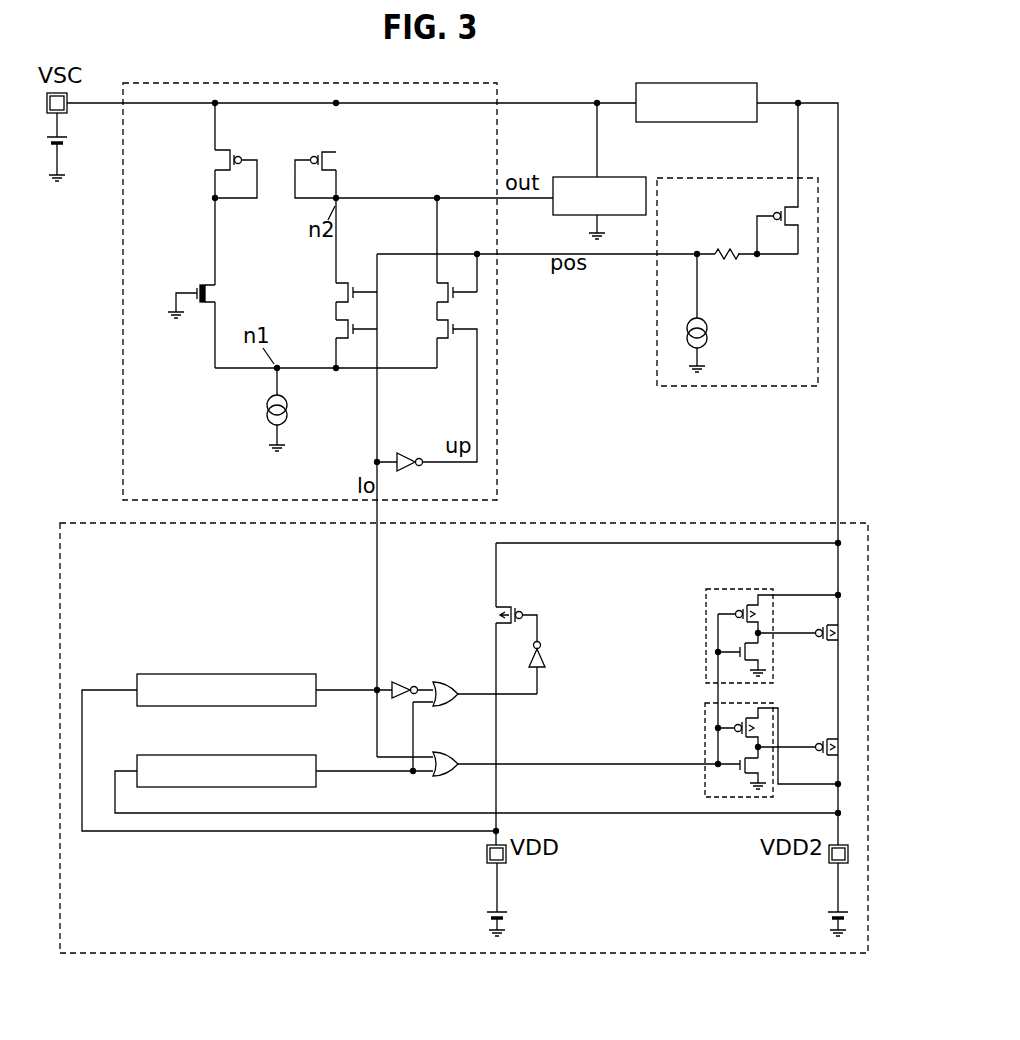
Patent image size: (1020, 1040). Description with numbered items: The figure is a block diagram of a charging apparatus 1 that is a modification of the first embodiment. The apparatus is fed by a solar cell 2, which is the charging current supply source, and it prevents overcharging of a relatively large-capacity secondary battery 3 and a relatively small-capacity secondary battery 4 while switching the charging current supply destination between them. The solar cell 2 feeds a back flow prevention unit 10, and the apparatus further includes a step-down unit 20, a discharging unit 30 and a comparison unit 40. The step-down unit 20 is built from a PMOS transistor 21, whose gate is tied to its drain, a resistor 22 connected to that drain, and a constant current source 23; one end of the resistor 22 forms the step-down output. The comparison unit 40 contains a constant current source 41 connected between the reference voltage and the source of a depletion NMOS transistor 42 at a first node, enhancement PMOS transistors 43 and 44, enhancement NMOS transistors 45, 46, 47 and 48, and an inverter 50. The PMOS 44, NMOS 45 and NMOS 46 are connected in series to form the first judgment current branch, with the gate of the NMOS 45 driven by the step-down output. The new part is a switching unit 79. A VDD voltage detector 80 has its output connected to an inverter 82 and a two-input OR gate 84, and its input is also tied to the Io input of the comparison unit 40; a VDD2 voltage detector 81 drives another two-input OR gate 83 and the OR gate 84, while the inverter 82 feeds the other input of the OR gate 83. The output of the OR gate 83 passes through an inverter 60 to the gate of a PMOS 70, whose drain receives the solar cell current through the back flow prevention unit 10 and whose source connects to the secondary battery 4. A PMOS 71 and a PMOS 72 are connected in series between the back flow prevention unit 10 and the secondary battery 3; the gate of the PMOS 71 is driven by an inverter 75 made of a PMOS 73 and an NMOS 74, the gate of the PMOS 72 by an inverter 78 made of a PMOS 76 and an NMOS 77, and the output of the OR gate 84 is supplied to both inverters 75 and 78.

The charging apparatus 1 is at (546, 88).
The solar cell 2 is at (62, 146).
The secondary battery 3 is at (832, 912).
The secondary battery 4 is at (491, 912).
The back flow prevention unit 10 is at (720, 82).
The step-down unit 20 is at (780, 389).
The PMOS transistor 21 is at (779, 210).
The resistor 22 is at (716, 250).
The constant current source 23 is at (713, 325).
The discharging unit 30 is at (617, 177).
The comparison unit 40 is at (121, 490).
The constant current source 41 is at (266, 412).
The depletion NMOS transistor 42 is at (198, 287).
The enhancement PMOS transistor 43 is at (213, 166).
The enhancement PMOS transistor 44 is at (340, 165).
The enhancement NMOS transistor 45 is at (330, 297).
The enhancement NMOS transistor 46 is at (330, 334).
The enhancement NMOS transistor 47 is at (432, 297).
The enhancement NMOS transistor 48 is at (432, 334).
The inverter 50 is at (410, 453).
The inverter 60 is at (548, 660).
The PMOS 70 is at (508, 605).
The PMOS 71 is at (826, 628).
The PMOS 72 is at (826, 750).
The PMOS 73 is at (745, 603).
The NMOS 74 is at (762, 646).
The inverter 75 is at (703, 602).
The PMOS 76 is at (760, 734).
The NMOS 77 is at (742, 766).
The inverter 78 is at (703, 718).
The switching unit 79 is at (153, 958).
The VDD voltage detector 80 is at (278, 673).
The VDD2 voltage detector 81 is at (278, 755).
The inverter 82 is at (399, 680).
The 2-OR 83 is at (450, 684).
The 2-OR 84 is at (450, 753).